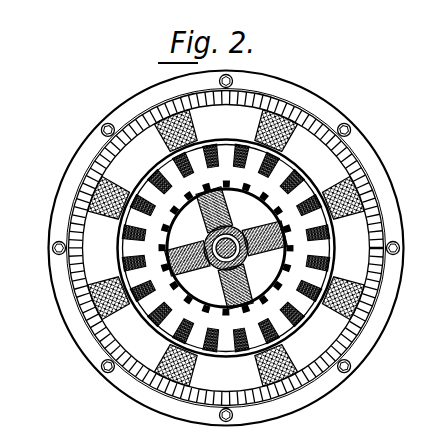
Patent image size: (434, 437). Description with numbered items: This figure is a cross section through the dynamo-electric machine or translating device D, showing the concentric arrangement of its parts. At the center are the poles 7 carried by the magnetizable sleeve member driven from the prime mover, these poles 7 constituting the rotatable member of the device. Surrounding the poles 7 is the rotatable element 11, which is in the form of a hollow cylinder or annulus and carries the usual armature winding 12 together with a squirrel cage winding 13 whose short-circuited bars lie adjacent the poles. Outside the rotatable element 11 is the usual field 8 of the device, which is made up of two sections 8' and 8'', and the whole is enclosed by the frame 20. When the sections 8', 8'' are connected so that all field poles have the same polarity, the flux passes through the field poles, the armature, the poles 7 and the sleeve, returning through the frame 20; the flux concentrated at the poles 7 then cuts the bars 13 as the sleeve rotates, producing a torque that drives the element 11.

The poles 7 is at (229, 248).
The field 8 is at (226, 248).
The field section 8' is at (226, 251).
The field section 8'' is at (208, 248).
The rotatable element 11 is at (226, 248).
The armature winding 12 is at (226, 248).
The squirrel cage winding 13 is at (236, 248).
The frame 20 is at (226, 245).